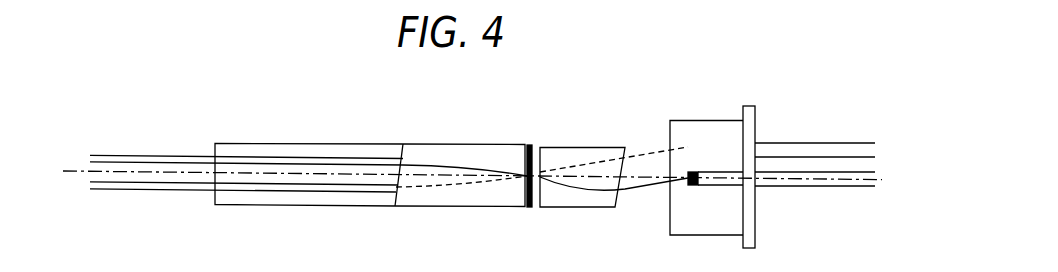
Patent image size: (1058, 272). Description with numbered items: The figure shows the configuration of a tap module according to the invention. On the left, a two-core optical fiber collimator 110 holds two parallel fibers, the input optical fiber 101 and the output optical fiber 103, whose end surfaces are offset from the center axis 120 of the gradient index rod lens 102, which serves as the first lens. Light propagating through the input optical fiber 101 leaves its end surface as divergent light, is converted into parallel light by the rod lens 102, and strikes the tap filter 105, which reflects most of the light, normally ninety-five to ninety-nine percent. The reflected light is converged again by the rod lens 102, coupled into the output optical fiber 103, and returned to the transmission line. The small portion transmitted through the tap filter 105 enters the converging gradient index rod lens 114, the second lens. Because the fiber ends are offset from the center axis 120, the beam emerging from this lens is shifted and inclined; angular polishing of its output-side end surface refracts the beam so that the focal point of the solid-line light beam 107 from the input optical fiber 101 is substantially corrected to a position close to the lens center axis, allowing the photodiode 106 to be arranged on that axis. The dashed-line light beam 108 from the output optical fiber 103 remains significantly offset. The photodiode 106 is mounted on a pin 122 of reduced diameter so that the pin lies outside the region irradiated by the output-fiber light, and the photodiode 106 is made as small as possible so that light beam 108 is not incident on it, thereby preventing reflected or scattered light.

The input optical fiber 101 is at (152, 155).
The output optical fiber 103 is at (150, 191).
The two-core optical fiber collimator 110 is at (213, 207).
The rod lens 102 is at (430, 145).
The center axis 120 is at (478, 175).
The tap filter 105 is at (529, 145).
The converging gradient index rod lens 114 is at (577, 148).
The light beam from the output optical fiber 108 is at (640, 160).
The light beam from the input optical fiber 107 is at (627, 190).
The photodiode 106 is at (692, 186).
The pin 122 is at (710, 172).